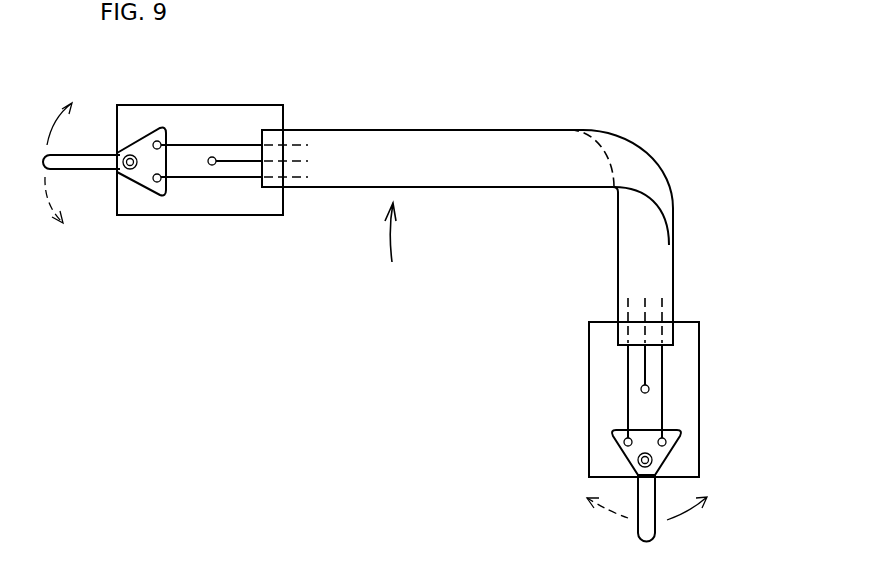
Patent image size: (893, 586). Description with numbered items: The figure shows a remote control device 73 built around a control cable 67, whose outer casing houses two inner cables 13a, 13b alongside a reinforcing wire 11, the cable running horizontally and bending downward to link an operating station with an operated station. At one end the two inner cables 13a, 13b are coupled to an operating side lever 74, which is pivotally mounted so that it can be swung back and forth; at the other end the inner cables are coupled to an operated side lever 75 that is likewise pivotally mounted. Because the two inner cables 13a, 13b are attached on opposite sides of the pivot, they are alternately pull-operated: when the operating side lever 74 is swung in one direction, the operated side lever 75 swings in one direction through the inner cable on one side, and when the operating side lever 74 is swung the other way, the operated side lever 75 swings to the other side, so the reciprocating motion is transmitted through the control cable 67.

The reinforcing wire 11 is at (243, 163).
The inner cable 13a is at (210, 143).
The inner cable 13b is at (200, 178).
The control cable 67 is at (482, 170).
The remote control device 73 is at (388, 248).
The operating side lever 74 is at (88, 172).
The operated side lever 75 is at (643, 498).